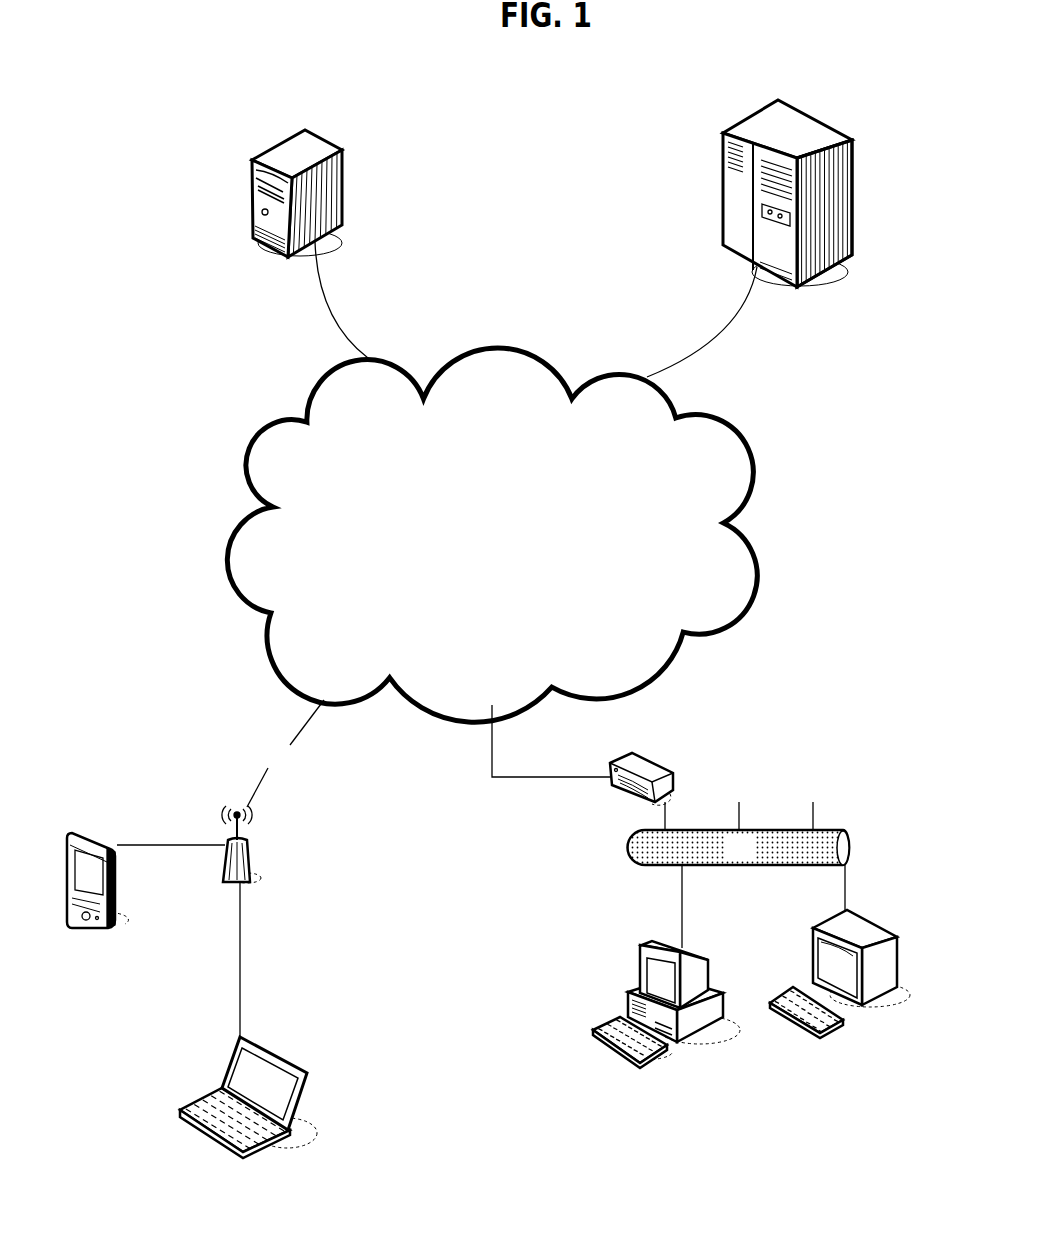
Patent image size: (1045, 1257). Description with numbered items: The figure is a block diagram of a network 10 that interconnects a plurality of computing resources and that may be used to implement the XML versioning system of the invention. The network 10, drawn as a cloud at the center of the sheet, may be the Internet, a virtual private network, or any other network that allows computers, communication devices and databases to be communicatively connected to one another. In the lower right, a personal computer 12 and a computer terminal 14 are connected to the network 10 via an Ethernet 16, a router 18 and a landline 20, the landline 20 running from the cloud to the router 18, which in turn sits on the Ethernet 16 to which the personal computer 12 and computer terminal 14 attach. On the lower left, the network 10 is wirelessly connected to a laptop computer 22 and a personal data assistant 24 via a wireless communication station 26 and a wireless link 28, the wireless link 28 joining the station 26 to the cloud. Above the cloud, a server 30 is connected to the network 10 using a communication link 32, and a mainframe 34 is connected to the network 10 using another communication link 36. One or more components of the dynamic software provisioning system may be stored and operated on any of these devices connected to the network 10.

The network 10 is at (492, 535).
The personal computer 12 is at (640, 945).
The computer terminal 14 is at (880, 930).
The Ethernet 16 is at (739, 875).
The router 18 is at (673, 777).
The landline 20 is at (542, 777).
The laptop computer 22 is at (292, 1133).
The personal data assistant 24 is at (97, 835).
The wireless communication station 26 is at (248, 863).
The wireless link 28 is at (285, 753).
The server 30 is at (342, 185).
The communication link 32 is at (352, 300).
The mainframe 34 is at (852, 255).
The communication link 36 is at (702, 322).